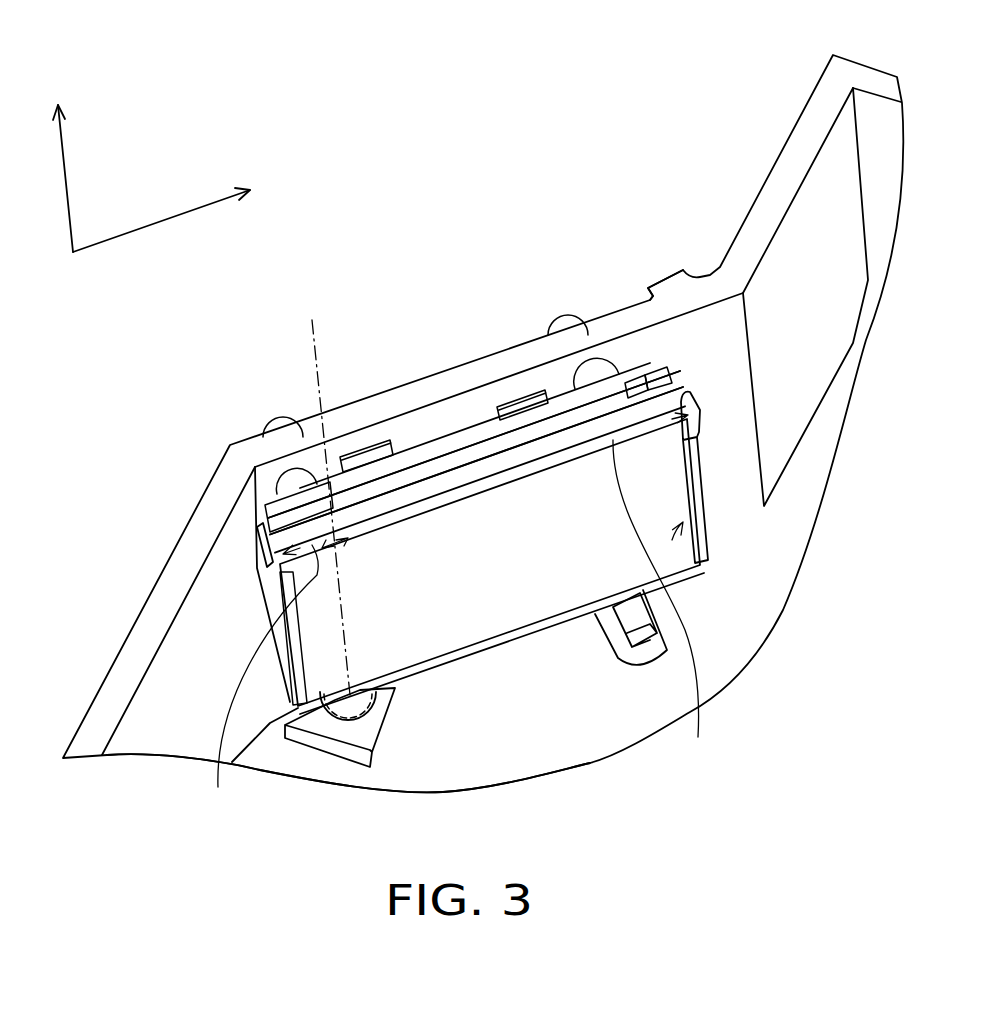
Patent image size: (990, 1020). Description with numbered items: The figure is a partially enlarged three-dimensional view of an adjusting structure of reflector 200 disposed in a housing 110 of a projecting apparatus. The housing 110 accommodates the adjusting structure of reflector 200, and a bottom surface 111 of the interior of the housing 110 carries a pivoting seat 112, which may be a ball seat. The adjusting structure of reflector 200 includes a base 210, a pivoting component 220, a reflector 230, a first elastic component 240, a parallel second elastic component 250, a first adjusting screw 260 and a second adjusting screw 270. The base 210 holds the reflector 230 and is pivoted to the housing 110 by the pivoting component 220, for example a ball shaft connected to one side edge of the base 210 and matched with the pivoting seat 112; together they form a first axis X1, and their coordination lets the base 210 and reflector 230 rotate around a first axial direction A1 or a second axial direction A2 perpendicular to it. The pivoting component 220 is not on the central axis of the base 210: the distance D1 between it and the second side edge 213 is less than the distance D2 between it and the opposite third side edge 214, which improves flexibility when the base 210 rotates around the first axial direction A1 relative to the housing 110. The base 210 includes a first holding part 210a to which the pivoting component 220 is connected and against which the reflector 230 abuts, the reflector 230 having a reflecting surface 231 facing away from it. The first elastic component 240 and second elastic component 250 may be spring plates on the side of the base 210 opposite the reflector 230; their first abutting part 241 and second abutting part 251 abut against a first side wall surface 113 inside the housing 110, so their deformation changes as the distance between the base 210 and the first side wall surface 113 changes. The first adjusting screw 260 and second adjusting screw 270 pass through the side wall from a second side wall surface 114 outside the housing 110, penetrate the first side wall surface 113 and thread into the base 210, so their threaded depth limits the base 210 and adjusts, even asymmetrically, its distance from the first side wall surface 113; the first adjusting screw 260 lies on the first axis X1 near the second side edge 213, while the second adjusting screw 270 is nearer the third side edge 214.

The housing 110 is at (840, 83).
The bottom surface 111 is at (496, 752).
The pivoting seat 112 is at (370, 725).
The first side wall surface 113 is at (722, 318).
The second side wall surface 114 is at (625, 303).
The adjusting structure of reflector 200 is at (235, 552).
The base 210 is at (475, 418).
The first holding part 210a is at (447, 437).
The second side edge 213 is at (260, 533).
The third side edge 214 is at (663, 377).
The pivoting component 220 is at (343, 712).
The reflector 230 is at (673, 497).
The reflecting surface 231 is at (705, 560).
The first elastic component 240 is at (400, 356).
The first abutting part 241 is at (367, 437).
The second elastic component 250 is at (590, 293).
The second abutting part 251 is at (527, 407).
The first adjusting screw 260 is at (273, 427).
The second adjusting screw 270 is at (570, 320).
The first axis X1 is at (278, 330).
The distance between pivoting component and second side edge D1 is at (263, 686).
The distance between pivoting component and third side edge D2 is at (661, 608).
The first axial direction A1 is at (60, 160).
The second axial direction A2 is at (179, 214).